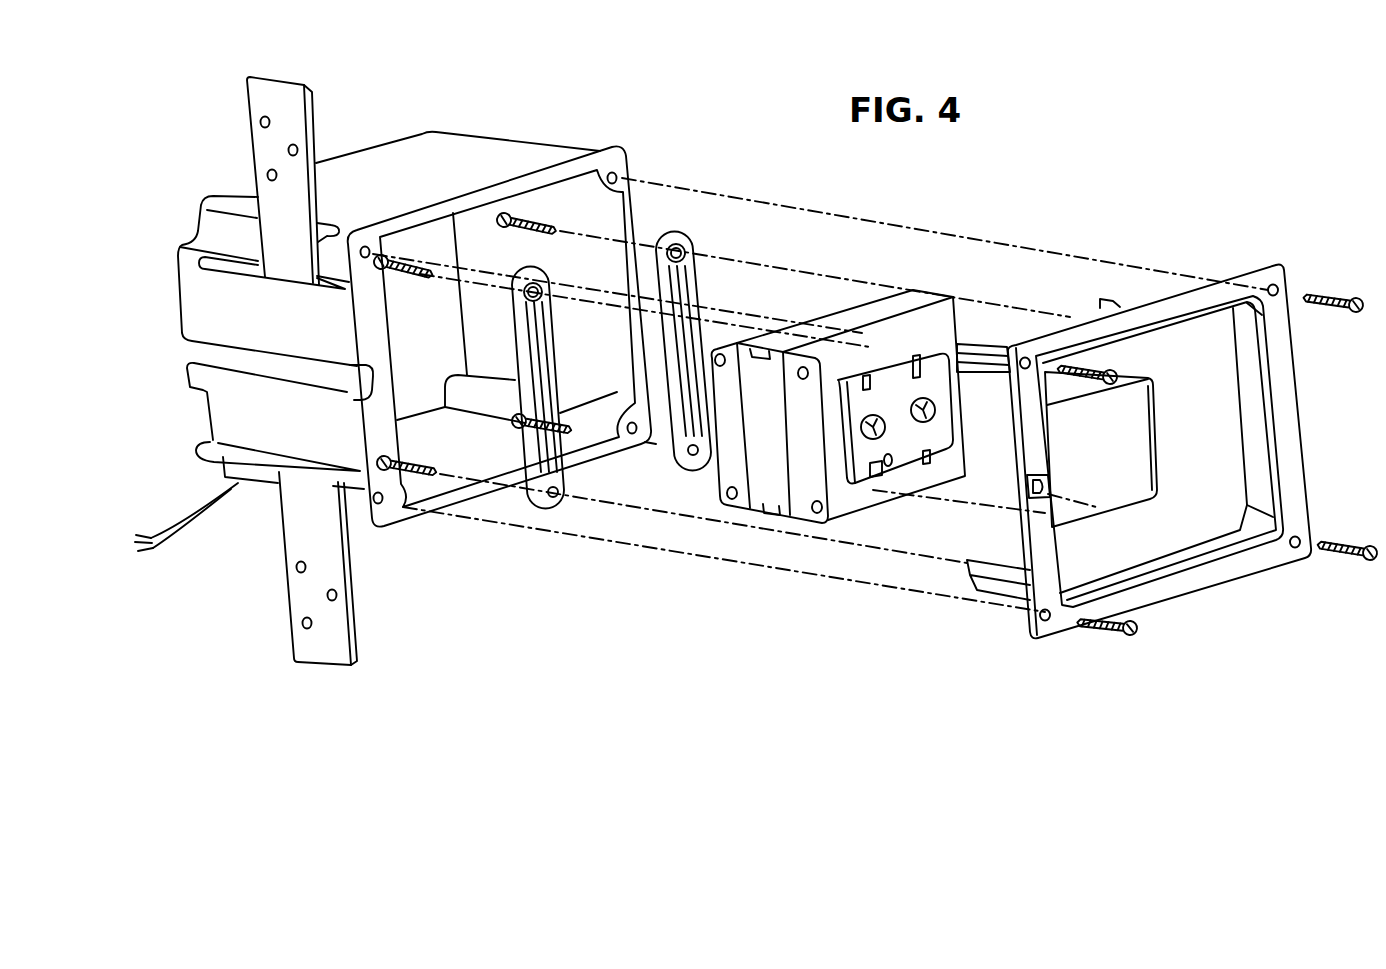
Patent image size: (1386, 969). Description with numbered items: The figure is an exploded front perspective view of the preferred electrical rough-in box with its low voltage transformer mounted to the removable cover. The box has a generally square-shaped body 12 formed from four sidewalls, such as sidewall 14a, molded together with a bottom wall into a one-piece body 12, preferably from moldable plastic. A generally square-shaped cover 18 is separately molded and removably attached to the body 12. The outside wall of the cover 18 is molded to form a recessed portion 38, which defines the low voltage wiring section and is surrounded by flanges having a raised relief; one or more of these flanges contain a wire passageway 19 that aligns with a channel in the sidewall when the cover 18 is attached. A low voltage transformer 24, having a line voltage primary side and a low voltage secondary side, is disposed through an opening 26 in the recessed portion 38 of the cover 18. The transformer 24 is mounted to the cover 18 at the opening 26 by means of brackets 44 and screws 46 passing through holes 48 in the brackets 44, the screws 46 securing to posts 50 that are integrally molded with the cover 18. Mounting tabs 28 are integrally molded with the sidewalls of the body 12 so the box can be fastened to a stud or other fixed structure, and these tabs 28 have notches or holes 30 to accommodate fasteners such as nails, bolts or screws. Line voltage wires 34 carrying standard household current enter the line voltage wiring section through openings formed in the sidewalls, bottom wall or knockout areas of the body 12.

The body 12 is at (517, 130).
The sidewall 14a is at (303, 436).
The cover 18 is at (1312, 414).
The wire passageway 19 is at (1028, 491).
The low voltage transformer 24 is at (904, 509).
The opening 26 is at (1118, 483).
The mounting tab 28 is at (312, 103).
The notches or holes 30 is at (260, 121).
The line voltage wires 34 is at (185, 531).
The recessed portion 38 is at (1207, 425).
The brackets 44 is at (557, 358).
The screws 46 is at (384, 271).
The holes 48 is at (539, 283).
The posts 50 is at (985, 378).